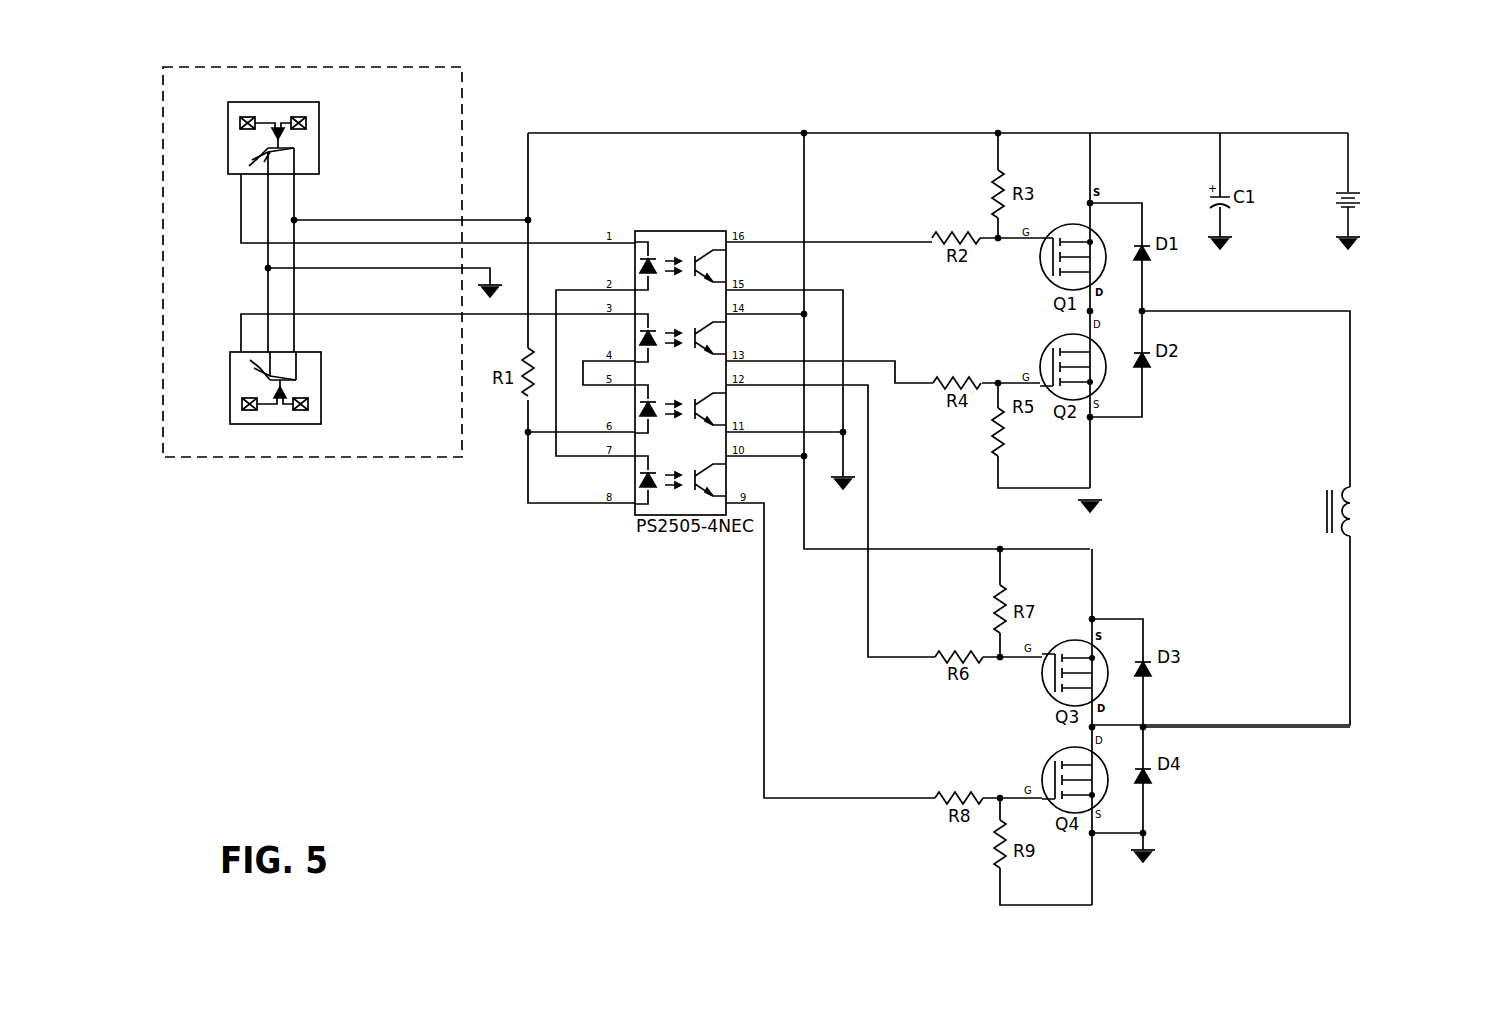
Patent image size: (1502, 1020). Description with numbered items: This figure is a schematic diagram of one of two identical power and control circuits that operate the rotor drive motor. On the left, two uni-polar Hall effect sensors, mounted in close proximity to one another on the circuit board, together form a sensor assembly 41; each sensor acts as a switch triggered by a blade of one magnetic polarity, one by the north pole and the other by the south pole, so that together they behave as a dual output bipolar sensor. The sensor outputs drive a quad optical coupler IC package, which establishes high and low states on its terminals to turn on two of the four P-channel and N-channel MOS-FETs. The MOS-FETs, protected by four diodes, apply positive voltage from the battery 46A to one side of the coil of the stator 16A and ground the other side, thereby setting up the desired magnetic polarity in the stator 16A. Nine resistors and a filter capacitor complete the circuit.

The sensor assembly 41 is at (362, 468).
The battery 46A is at (1360, 178).
The stator 16A is at (1361, 487).